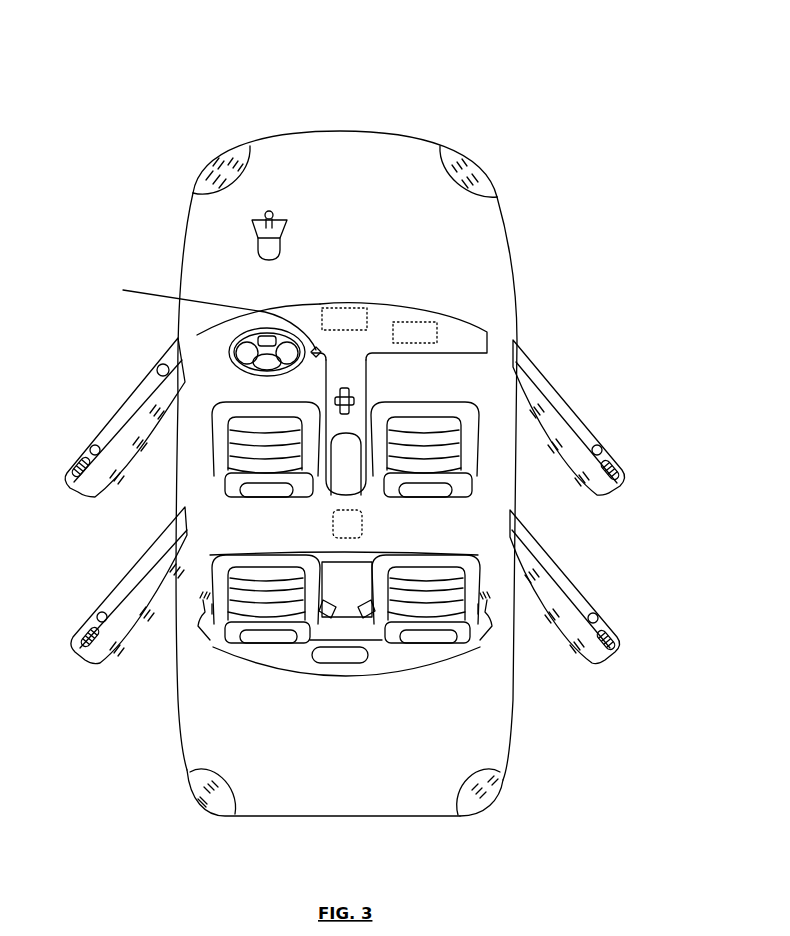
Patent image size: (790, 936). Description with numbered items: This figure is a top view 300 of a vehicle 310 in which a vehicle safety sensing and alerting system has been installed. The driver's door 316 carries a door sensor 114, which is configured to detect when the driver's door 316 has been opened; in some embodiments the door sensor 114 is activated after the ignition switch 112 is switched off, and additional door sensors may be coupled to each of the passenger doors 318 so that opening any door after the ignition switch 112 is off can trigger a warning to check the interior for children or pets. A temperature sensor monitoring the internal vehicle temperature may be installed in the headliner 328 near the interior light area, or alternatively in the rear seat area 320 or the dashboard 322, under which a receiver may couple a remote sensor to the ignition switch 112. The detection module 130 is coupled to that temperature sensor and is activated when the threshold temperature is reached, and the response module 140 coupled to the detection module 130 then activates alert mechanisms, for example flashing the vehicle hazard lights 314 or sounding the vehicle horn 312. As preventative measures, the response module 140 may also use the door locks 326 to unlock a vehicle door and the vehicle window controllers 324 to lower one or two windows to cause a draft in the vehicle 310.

The vehicle environment overview 300 is at (105, 60).
The vehicle 310 is at (336, 133).
The vehicle horn 312 is at (252, 222).
The vehicle hazard lights 314 is at (212, 167).
The response module 140 is at (320, 304).
The ignition switch 112 is at (227, 388).
The door sensor 114 is at (160, 363).
The detection module 130 is at (411, 322).
The dashboard 322 is at (458, 337).
The driver's door 316 is at (115, 402).
The passenger doors 318 is at (578, 408).
The door locks 326 is at (90, 444).
The vehicle window controllers 324 is at (72, 462).
The headliner 328 is at (367, 533).
The rear seat area 320 is at (345, 657).